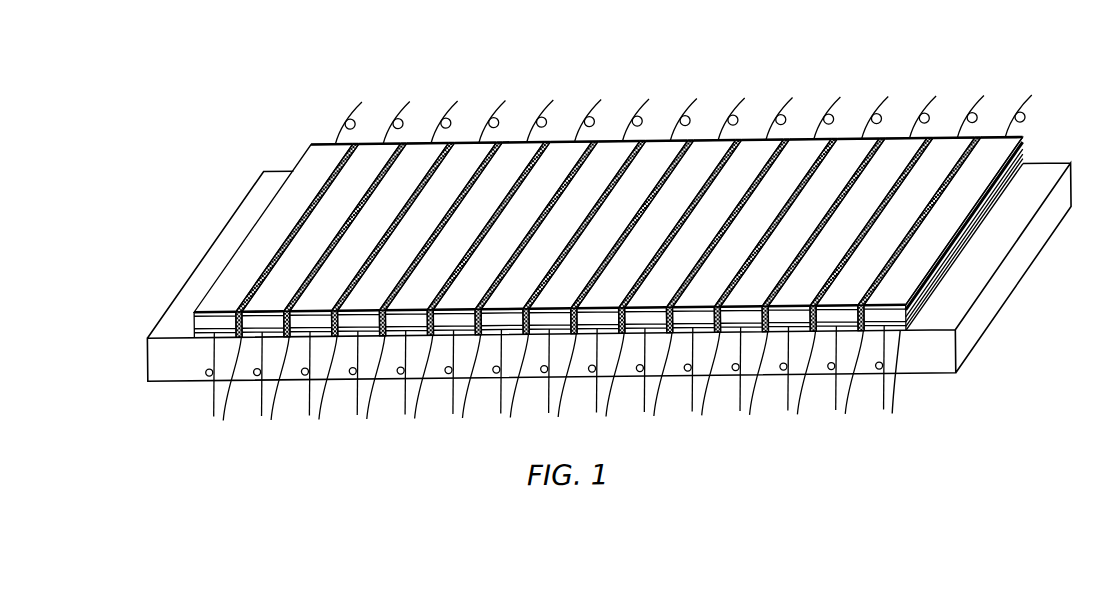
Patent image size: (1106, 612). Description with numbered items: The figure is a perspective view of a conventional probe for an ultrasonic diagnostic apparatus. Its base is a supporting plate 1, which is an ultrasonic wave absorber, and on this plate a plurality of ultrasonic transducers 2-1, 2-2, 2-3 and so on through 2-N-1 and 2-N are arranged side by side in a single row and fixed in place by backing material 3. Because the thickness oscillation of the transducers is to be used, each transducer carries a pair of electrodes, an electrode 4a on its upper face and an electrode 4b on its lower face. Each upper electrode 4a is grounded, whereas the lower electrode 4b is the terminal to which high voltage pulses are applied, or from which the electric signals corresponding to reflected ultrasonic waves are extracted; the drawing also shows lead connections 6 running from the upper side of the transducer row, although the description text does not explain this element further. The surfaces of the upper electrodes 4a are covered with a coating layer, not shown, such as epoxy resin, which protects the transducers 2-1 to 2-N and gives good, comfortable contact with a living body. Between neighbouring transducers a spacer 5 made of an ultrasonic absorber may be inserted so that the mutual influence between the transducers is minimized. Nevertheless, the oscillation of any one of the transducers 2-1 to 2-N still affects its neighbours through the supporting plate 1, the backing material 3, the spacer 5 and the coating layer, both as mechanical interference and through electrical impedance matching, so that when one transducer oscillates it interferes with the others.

The supporting plate 1 is at (172, 369).
The ultrasonic transducer 2-1 is at (323, 133).
The ultrasonic transducer 2-2 is at (378, 133).
The ultrasonic transducer 2-3 is at (425, 133).
The ultrasonic transducer 2-N-1 is at (947, 133).
The ultrasonic transducer 2-N is at (997, 133).
The backing material 3 is at (571, 385).
The electrode 4a is at (247, 240).
The electrode 4b is at (198, 326).
The spacer 5 is at (573, 387).
The lead wire 6 is at (683, 119).